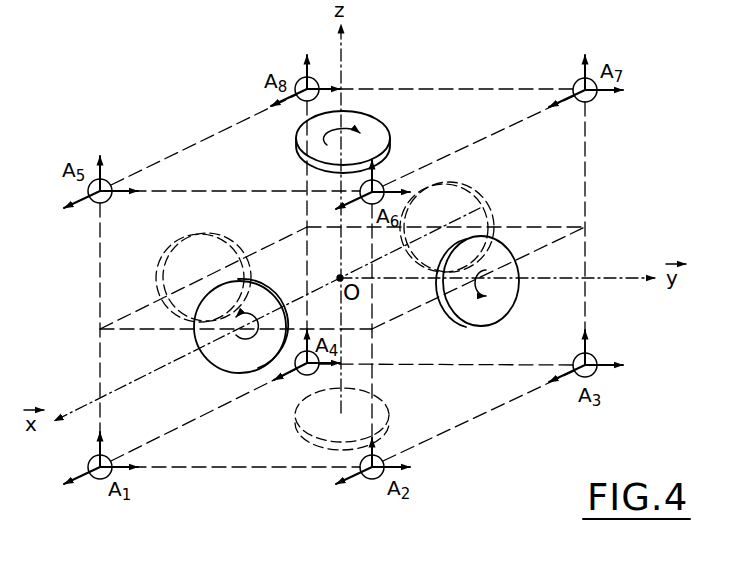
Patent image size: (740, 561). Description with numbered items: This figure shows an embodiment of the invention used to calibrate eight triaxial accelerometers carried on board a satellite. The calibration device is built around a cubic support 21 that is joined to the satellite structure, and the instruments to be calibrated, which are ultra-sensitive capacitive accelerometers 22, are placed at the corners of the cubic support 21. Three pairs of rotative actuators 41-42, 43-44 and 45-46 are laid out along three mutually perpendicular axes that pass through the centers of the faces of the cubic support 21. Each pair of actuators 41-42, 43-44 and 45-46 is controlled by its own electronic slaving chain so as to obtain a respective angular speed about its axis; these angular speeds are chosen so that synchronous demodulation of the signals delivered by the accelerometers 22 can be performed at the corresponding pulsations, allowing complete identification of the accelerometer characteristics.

The cubic support 21 is at (194, 146).
The capacitive accelerometers 22 is at (301, 75).
The rotative actuator 41 is at (486, 189).
The rotative actuator 42 is at (210, 372).
The rotative actuator 43 is at (174, 244).
The rotative actuator 44 is at (505, 318).
The rotative actuator 45 is at (392, 405).
The rotative actuator 46 is at (380, 117).